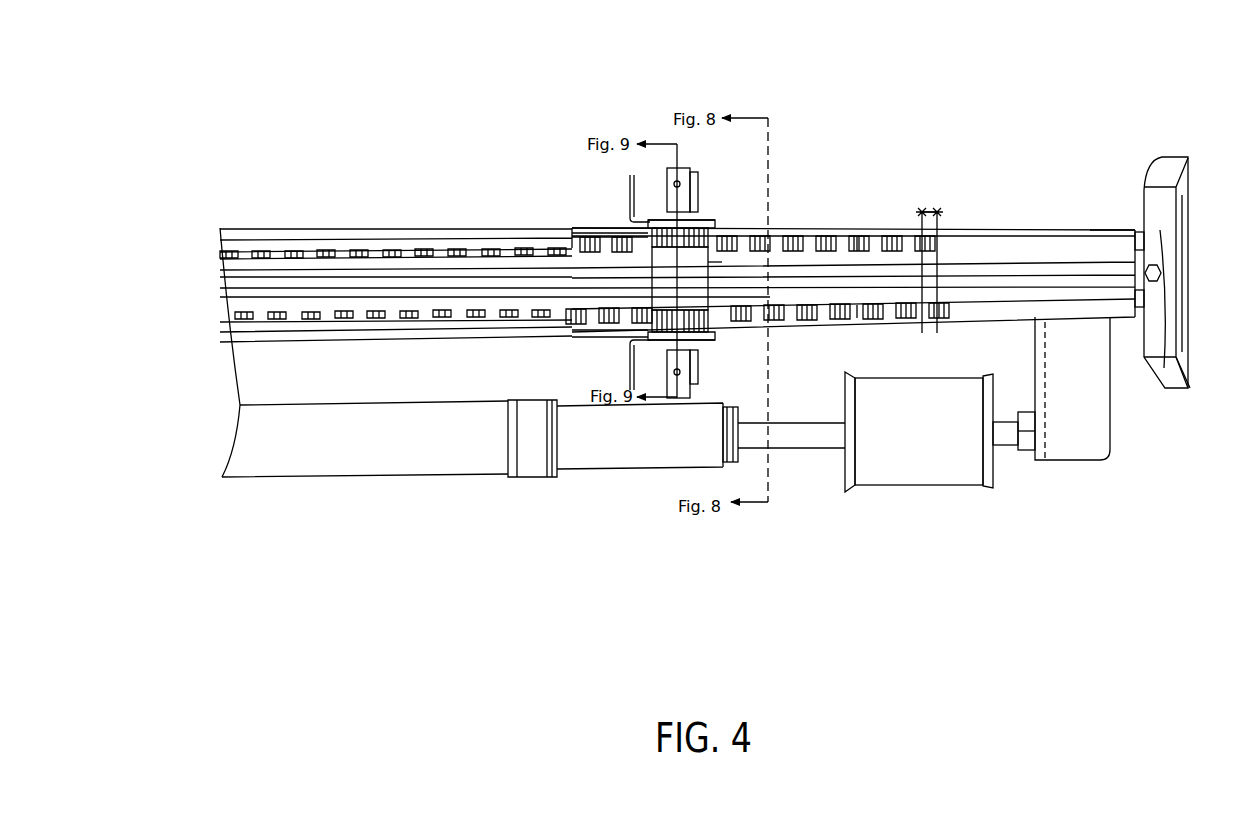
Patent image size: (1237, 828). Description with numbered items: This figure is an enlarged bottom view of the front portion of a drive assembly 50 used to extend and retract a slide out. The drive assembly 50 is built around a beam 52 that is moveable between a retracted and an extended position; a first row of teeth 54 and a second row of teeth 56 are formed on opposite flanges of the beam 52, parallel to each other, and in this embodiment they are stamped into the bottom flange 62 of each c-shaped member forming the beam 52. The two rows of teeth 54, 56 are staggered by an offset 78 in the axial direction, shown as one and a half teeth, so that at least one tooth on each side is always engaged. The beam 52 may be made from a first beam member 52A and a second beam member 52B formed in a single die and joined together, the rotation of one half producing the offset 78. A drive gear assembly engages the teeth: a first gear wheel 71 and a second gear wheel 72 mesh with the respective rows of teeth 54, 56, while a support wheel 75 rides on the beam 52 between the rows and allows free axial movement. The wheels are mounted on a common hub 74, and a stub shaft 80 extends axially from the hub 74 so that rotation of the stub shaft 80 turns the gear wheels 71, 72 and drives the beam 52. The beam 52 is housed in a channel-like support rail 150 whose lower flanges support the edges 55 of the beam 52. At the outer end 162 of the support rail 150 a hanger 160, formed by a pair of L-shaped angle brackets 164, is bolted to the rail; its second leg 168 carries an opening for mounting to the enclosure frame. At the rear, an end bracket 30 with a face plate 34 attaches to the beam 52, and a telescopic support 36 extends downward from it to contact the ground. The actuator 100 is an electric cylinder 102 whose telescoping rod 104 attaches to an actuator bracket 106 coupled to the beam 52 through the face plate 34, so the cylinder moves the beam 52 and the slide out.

The end bracket 30 is at (1174, 145).
The face plate 34 is at (1176, 362).
The support 36 is at (1157, 357).
The drive assembly 50 is at (621, 82).
The beam 52 is at (1052, 245).
The first beam member 52A is at (1086, 325).
The receiver rear end 52B is at (1098, 223).
The first row of teeth 54 is at (808, 320).
The edges of beam 55 is at (870, 232).
The second row of teeth 56 is at (826, 232).
The bottom flange 62 is at (975, 240).
The first gear wheel 71 is at (627, 320).
The second gear wheel 72 is at (640, 240).
The hub 74 is at (692, 257).
The support wheel 75 is at (640, 277).
The offset 78 is at (932, 212).
The stub shaft 80 is at (690, 190).
The actuator 100 is at (376, 450).
The electric cylinder 102 is at (488, 438).
The telescoping rod 104 is at (805, 435).
The actuator bracket 106 is at (1077, 440).
The support rail 150 is at (380, 223).
The hanger 160 is at (622, 361).
The outer end 162 is at (620, 217).
The L-shaped angle brackets 164 is at (634, 193).
The second leg 168 is at (717, 278).